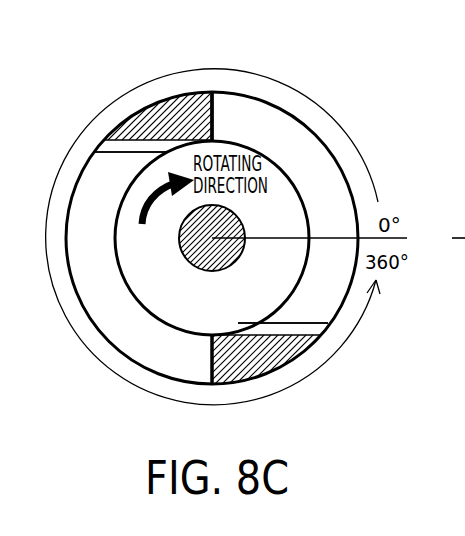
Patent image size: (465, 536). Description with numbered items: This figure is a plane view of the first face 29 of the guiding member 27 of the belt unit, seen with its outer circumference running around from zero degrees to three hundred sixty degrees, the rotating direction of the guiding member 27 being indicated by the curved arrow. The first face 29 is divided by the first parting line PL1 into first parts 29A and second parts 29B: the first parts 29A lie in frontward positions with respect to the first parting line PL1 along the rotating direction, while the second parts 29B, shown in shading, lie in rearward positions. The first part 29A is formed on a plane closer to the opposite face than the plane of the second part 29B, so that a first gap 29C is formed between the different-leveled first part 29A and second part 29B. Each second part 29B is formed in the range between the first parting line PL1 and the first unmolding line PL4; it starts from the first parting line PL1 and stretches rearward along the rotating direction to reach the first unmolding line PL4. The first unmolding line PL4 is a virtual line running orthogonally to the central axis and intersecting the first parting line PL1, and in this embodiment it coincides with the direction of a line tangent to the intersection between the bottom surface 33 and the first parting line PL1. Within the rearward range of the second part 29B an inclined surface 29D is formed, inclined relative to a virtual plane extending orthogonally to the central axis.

The guiding member 27 is at (216, 92).
The first face 29 is at (310, 160).
The first part 29A is at (235, 122).
The second part 29B is at (178, 112).
The first gap 29C is at (197, 120).
The inclined surface 29D is at (128, 150).
The bottom surface 33 is at (305, 200).
The first parting line PL1 is at (220, 93).
The first unmolding line PL4 is at (390, 323).